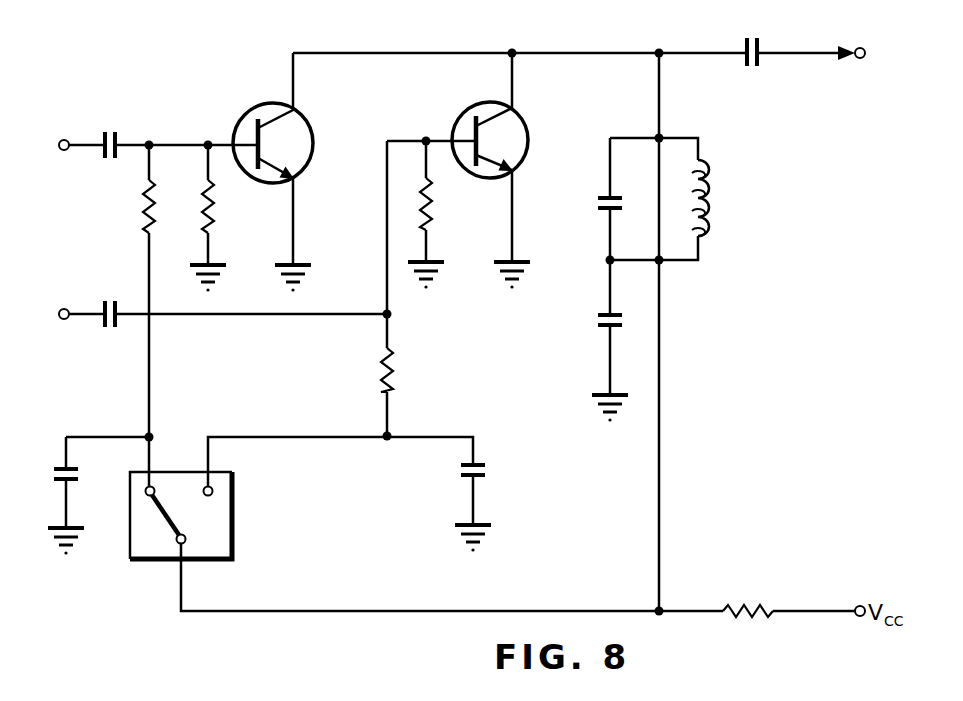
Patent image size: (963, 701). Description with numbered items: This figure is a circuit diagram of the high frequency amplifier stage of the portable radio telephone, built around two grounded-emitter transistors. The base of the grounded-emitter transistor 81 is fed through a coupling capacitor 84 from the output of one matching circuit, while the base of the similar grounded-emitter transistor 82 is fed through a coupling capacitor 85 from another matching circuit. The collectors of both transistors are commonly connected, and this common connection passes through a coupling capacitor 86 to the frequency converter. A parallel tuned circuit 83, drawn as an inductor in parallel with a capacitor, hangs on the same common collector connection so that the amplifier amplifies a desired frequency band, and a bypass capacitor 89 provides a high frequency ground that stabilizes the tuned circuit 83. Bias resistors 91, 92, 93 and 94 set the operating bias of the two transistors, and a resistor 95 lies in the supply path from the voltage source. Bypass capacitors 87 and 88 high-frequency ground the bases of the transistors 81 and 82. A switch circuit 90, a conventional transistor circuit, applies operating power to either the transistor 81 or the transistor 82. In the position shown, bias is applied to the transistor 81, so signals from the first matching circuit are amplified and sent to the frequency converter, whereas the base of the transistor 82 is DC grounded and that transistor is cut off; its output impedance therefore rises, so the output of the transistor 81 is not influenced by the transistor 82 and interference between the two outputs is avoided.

The grounded-emitter transistor 81 is at (238, 124).
The grounded-emitter transistor 82 is at (463, 110).
The parallel tuned circuit 83 is at (728, 187).
The coupling capacitor 84 is at (102, 135).
The coupling capacitor 85 is at (102, 323).
The coupling capacitor 86 is at (745, 46).
The bypass capacitor 87 is at (58, 467).
The bypass capacitor 88 is at (478, 478).
The bypass capacitor 89 is at (603, 328).
The switch circuit 90 is at (235, 522).
The bias resistor 91 is at (143, 222).
The bias resistor 92 is at (211, 215).
The bias resistor 93 is at (393, 366).
The bias resistor 94 is at (433, 207).
The resistor 95 is at (750, 603).